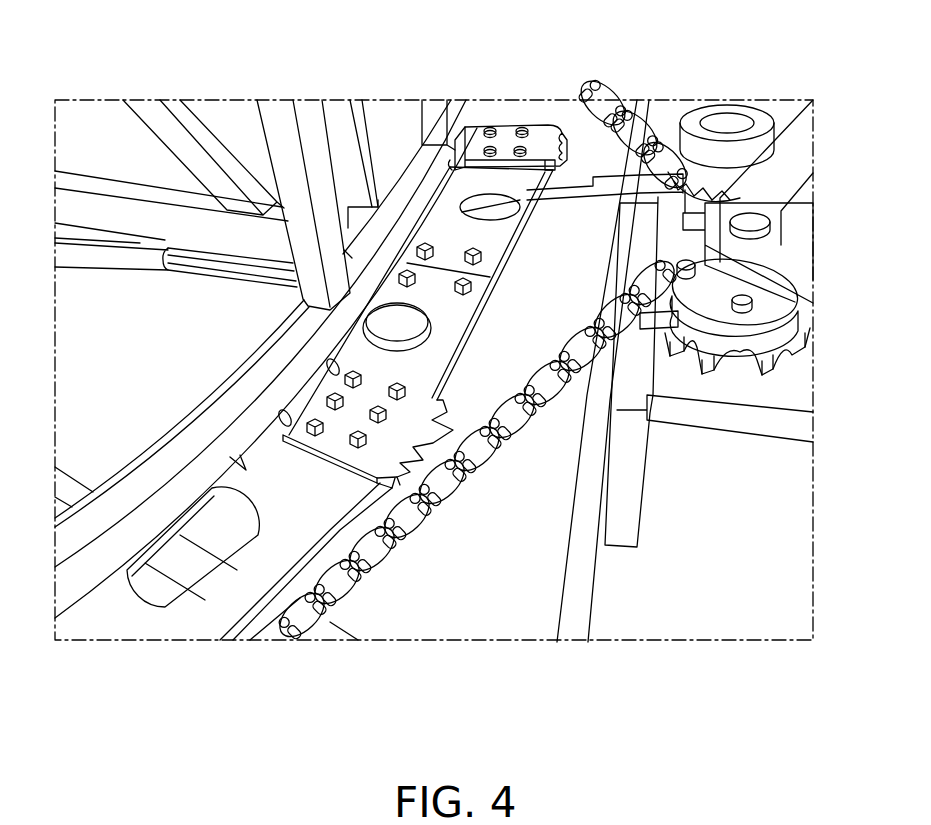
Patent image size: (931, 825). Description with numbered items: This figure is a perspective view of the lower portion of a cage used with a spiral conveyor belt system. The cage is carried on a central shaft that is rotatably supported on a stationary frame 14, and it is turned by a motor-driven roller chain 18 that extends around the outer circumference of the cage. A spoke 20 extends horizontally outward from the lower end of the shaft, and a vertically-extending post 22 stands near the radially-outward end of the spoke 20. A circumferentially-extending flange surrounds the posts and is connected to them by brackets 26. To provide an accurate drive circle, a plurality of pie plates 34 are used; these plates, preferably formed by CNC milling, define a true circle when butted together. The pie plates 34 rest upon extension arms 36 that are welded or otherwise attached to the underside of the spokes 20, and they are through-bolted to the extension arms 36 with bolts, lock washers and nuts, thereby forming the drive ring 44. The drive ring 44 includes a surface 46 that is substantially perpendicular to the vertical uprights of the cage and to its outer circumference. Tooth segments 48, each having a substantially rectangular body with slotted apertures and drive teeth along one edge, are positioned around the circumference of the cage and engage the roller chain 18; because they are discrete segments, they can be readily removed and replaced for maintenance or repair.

The stationary frame 14 is at (577, 620).
The roller chain 18 is at (315, 640).
The spokes 20 is at (78, 208).
The vertically-extending post 22 is at (363, 108).
The brackets 26 is at (358, 221).
The pie plates 34 is at (500, 226).
The extension arms 36 is at (248, 272).
The drive ring 44 is at (522, 261).
The surface 46 is at (300, 510).
The tooth segments 48 is at (547, 122).